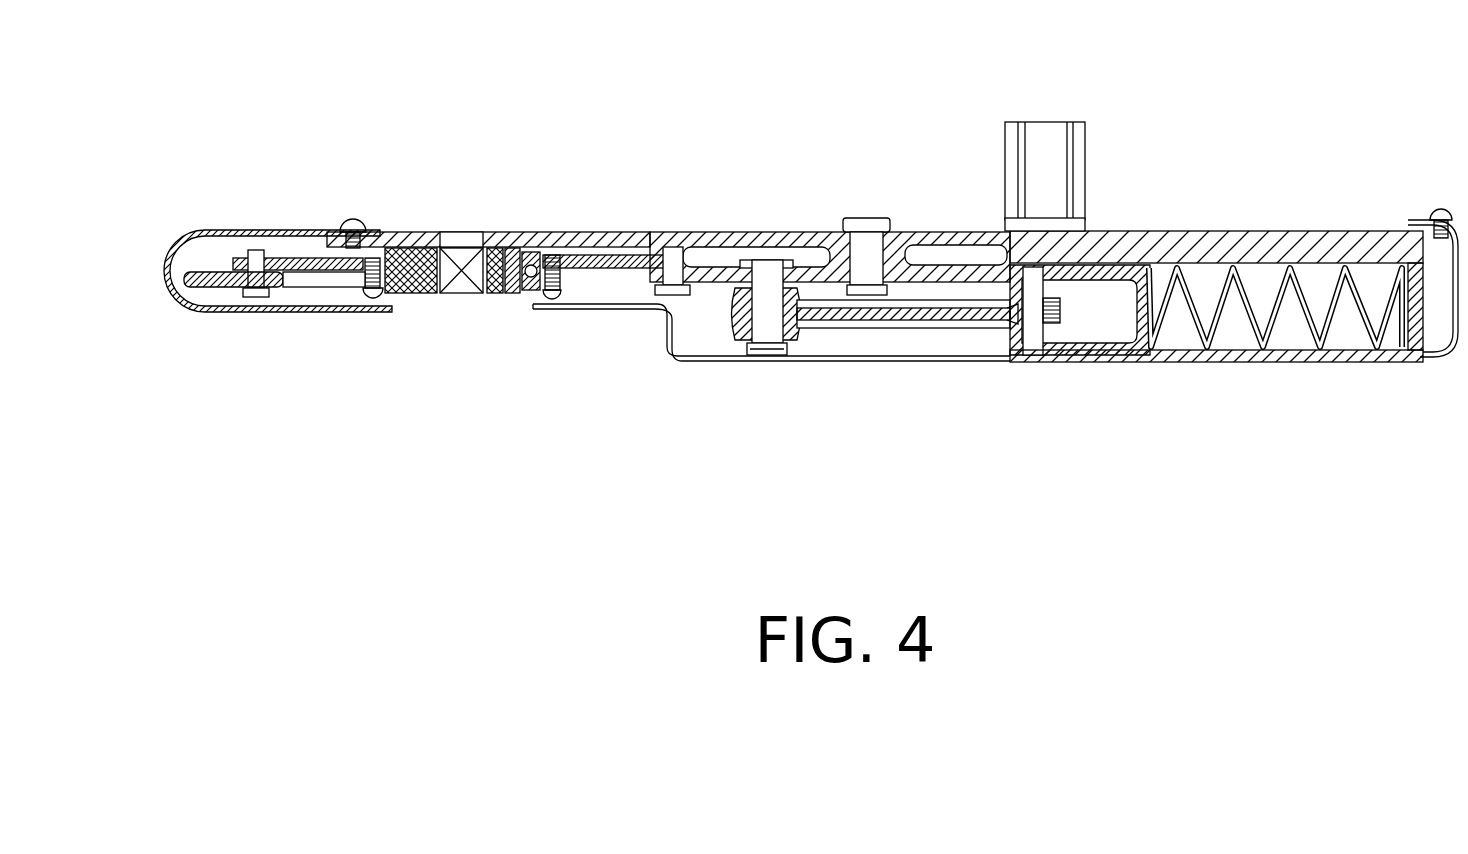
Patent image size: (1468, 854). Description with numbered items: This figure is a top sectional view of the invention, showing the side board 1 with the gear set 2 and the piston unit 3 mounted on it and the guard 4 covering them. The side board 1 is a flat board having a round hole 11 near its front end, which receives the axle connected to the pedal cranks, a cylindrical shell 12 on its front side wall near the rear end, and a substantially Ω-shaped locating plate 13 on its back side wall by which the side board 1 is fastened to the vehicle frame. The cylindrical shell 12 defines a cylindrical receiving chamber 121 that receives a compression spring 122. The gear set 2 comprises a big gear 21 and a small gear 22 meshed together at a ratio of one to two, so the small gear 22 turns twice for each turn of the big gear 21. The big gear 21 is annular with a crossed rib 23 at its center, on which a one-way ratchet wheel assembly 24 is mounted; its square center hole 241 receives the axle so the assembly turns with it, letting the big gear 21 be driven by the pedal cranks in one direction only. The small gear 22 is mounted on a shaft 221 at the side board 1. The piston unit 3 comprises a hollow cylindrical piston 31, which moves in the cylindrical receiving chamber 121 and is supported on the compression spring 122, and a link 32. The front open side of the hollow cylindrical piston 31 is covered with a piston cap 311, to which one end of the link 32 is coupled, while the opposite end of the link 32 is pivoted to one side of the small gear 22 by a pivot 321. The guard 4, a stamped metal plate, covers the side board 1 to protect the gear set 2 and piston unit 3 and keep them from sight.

The side board 1 is at (735, 228).
The round hole 11 is at (473, 240).
The cylindrical shell 12 is at (1240, 365).
The cylindrical receiving chamber 121 is at (1180, 330).
The compression spring 122 is at (1333, 322).
The locating plate 13 is at (1045, 150).
The gear set 2 is at (586, 272).
The big gear 21 is at (222, 290).
The small gear 22 is at (970, 255).
The shaft 221 is at (866, 232).
The crossed rib 23 is at (313, 258).
The one-way ratchet wheel assembly 24 is at (413, 248).
The square center hole 241 is at (462, 293).
The piston unit 3 is at (985, 322).
The hollow cylindrical piston 31 is at (1092, 356).
The piston cap 311 is at (1035, 340).
The link 32 is at (745, 320).
The pivot 321 is at (767, 322).
The guard 4 is at (220, 230).